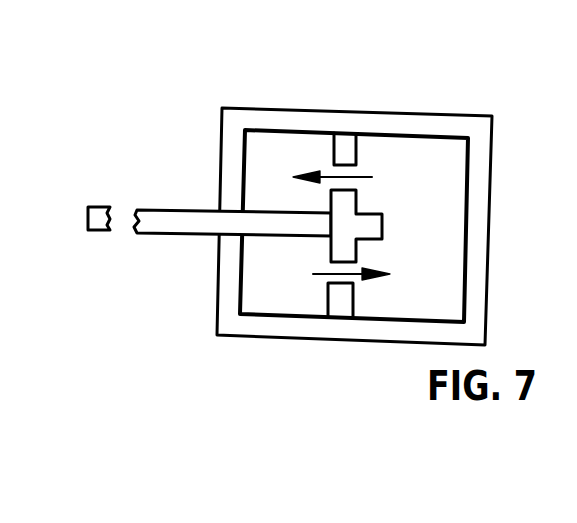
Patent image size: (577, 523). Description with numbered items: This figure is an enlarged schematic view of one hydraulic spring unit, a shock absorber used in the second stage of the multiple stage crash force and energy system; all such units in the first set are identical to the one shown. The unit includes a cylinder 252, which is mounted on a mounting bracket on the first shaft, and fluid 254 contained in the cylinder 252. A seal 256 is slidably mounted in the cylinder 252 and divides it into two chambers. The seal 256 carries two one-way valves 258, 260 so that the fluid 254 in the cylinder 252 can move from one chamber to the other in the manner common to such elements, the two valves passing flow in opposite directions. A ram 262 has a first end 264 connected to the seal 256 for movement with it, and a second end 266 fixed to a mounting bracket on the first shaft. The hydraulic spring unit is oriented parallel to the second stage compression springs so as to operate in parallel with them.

The cylinder 252 is at (382, 122).
The fluid 254 is at (410, 157).
The seal 256 is at (343, 147).
The one-way valve 258 is at (317, 172).
The one-way valve 260 is at (322, 277).
The ram 262 is at (178, 217).
The first end of the ram 264 is at (322, 225).
The second end of the ram 266 is at (98, 208).